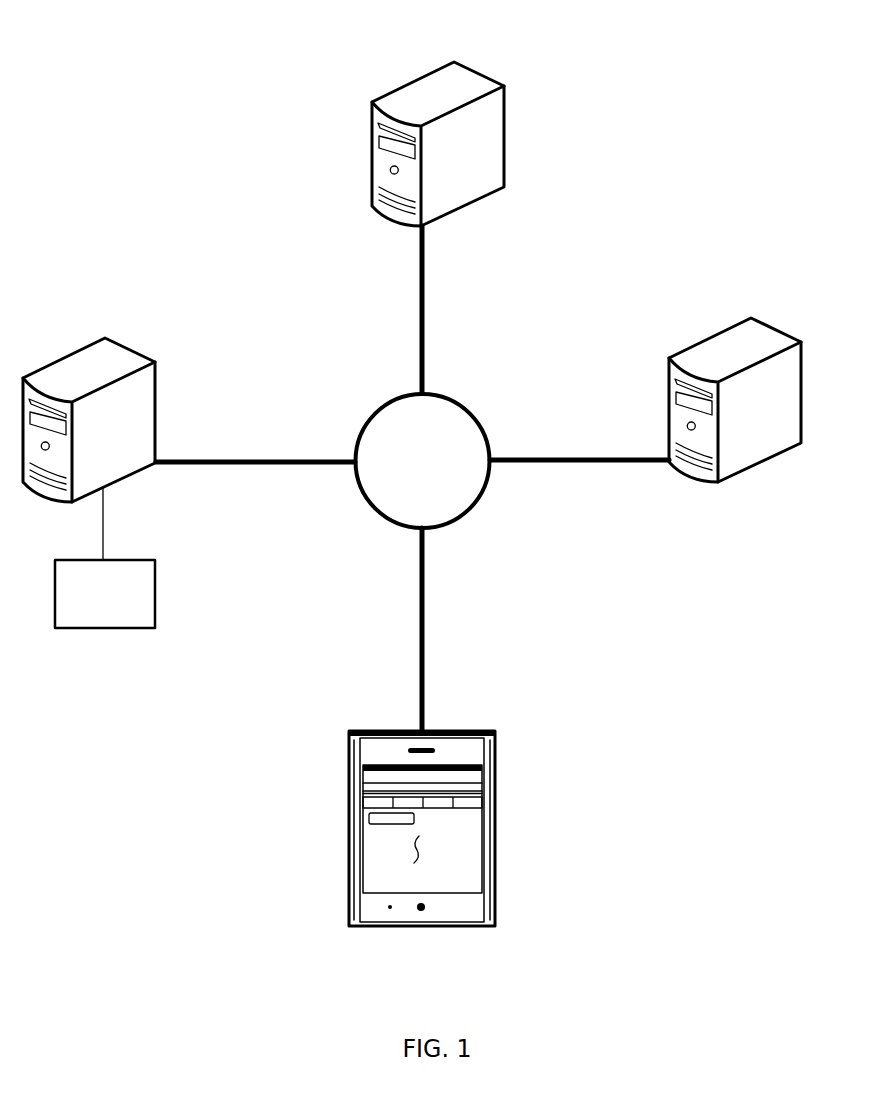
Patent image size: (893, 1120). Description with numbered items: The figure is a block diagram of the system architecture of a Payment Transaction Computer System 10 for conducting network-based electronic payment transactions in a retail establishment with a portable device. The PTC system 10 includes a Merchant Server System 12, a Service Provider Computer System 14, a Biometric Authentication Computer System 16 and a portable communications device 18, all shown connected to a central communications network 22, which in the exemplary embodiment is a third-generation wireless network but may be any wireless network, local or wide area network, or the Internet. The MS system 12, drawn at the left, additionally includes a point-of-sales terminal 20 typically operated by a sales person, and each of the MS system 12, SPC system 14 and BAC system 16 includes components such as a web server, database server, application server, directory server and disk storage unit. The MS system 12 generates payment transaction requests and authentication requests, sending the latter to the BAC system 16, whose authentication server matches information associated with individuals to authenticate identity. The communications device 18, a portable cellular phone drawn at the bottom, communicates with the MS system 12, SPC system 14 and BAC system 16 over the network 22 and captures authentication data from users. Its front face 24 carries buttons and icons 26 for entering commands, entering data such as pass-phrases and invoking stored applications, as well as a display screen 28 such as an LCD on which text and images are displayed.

The Payment Transaction Computer (PTC) System 10 is at (147, 122).
The Merchant Server (MS) System 12 is at (78, 344).
The Service Provider Computer (SPC) System 14 is at (420, 75).
The Biometric Authentication Computer (BAC) System 16 is at (776, 327).
The portable communications device 18 is at (412, 820).
The point-of-sales (POS) terminal 20 is at (105, 558).
The communications network 22 is at (463, 405).
The front face 24 is at (388, 907).
The buttons and icons 26 is at (463, 801).
The display screen 28 is at (415, 848).